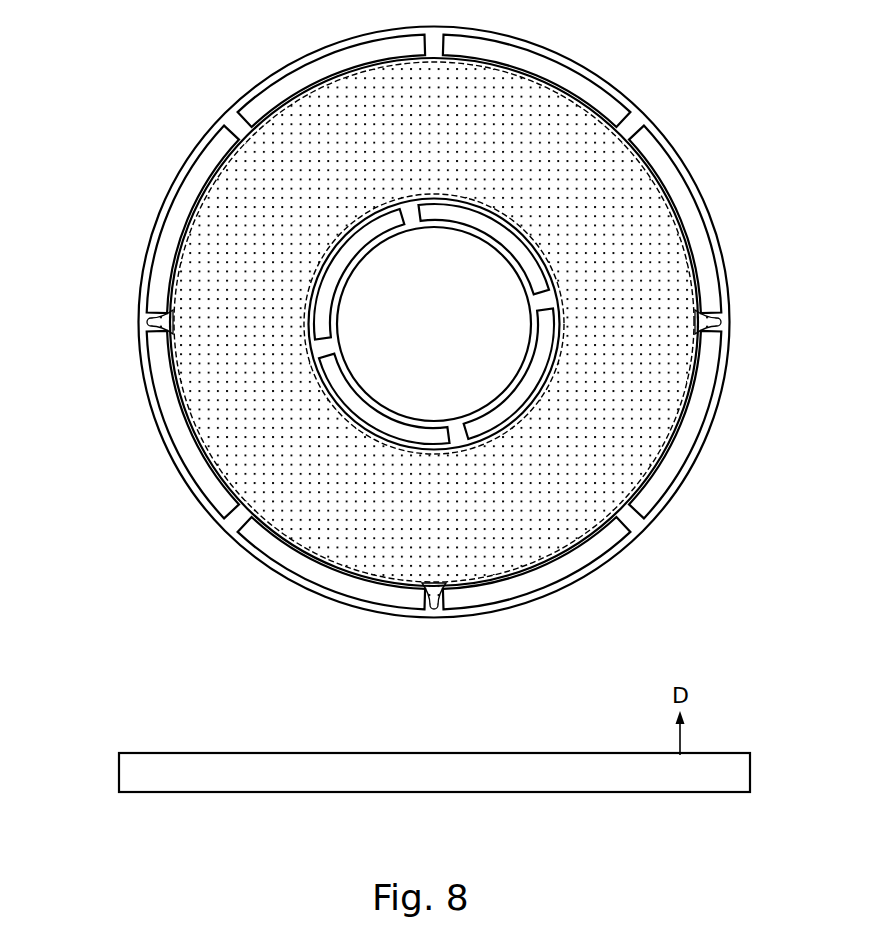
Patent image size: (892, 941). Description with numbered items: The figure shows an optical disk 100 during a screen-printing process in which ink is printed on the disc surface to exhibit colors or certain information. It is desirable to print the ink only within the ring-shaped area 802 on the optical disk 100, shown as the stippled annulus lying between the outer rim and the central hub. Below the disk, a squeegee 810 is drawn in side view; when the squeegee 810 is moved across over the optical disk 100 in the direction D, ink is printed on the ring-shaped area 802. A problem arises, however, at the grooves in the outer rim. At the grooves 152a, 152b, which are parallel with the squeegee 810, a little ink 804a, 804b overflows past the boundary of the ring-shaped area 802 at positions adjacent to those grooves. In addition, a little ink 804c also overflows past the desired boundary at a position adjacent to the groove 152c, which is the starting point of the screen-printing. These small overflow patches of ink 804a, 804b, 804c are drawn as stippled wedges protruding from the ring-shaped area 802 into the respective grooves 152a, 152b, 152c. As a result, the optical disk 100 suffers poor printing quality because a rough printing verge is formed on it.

The optical disk 100 is at (654, 109).
The ring-shaped area 802 is at (326, 102).
The groove 152a is at (722, 323).
The groove 152b is at (145, 323).
The groove 152c is at (433, 598).
The ink 804a is at (720, 327).
The ink 804b is at (150, 326).
The ink 804c is at (435, 598).
The squeegee 810 is at (612, 775).